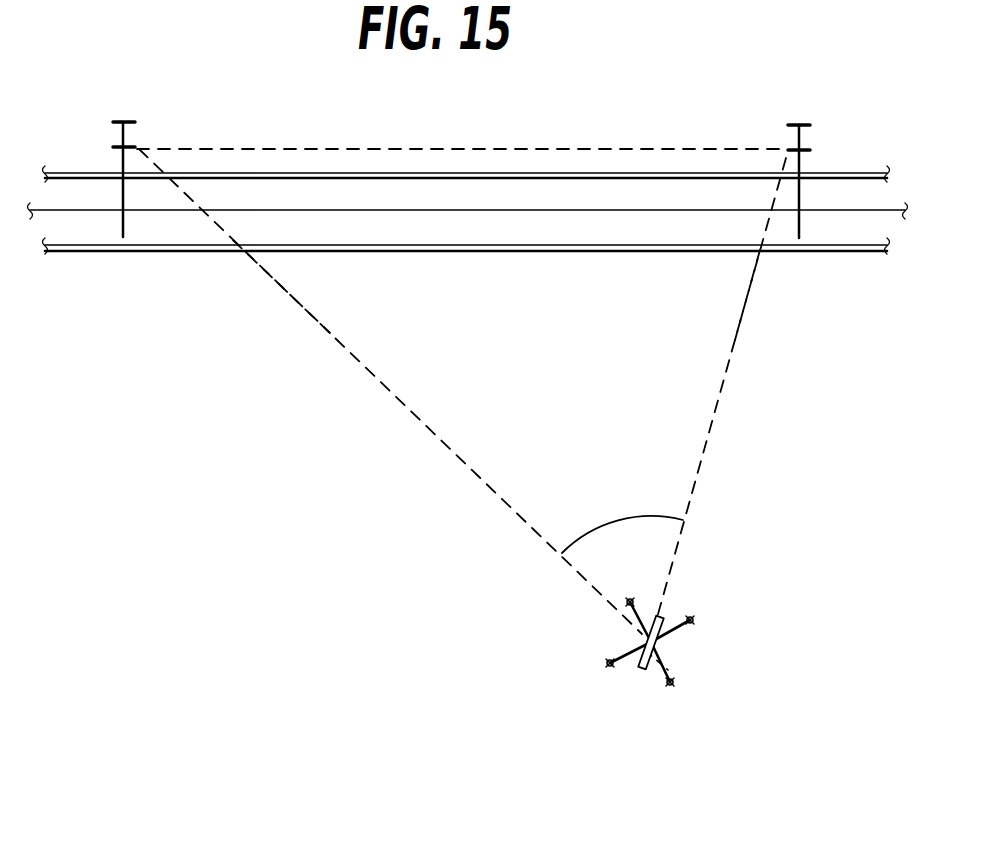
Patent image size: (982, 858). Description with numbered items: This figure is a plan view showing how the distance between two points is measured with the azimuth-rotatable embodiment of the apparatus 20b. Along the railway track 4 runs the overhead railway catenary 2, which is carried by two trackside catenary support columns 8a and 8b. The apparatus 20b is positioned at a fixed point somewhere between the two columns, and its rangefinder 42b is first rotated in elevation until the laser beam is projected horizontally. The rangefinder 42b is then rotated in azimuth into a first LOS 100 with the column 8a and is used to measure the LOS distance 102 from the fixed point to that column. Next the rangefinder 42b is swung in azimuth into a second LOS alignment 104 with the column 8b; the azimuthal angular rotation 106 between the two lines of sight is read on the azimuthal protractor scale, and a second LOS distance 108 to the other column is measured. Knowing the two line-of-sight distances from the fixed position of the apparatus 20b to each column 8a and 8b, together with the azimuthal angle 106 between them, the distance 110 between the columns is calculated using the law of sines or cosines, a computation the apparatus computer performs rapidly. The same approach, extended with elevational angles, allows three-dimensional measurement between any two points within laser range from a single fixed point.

The railway catenary 2 is at (40, 212).
The railway track 4 is at (188, 254).
The catenary support column 8a is at (100, 160).
The catenary support column 8b is at (821, 162).
The apparatus 20b is at (685, 675).
The rangefinder 42b is at (638, 668).
The first LOS 100 is at (330, 333).
The LOS distance 102 is at (400, 398).
The second LOS alignment 104 is at (713, 422).
The azimuthal angular rotation 106 is at (593, 528).
The second LOS distance 108 is at (743, 308).
The distance between the columns 110 is at (512, 148).